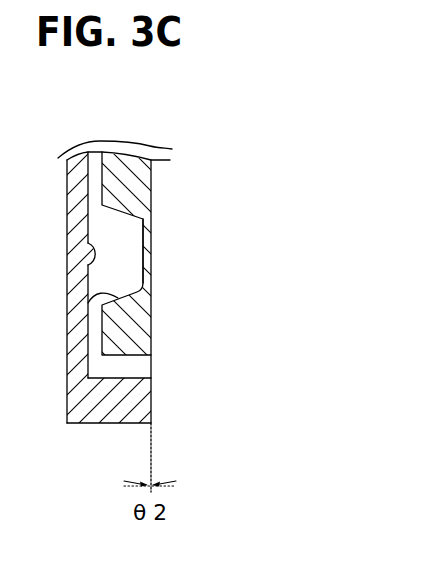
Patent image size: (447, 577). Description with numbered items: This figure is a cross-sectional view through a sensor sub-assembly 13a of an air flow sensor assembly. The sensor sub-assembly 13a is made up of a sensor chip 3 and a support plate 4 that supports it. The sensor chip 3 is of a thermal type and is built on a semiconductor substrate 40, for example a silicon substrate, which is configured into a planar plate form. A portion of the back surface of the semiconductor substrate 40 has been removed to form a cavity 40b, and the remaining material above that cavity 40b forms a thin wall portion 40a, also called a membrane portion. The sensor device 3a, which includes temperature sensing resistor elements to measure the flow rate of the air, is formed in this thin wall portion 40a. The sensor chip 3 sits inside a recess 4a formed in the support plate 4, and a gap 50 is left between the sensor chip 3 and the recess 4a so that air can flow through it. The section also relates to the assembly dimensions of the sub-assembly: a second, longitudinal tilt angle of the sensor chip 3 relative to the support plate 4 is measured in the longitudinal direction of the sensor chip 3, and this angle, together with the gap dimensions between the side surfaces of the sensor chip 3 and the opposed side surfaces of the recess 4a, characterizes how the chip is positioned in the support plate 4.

The sensor chip 3 is at (137, 196).
The sensor device 3a is at (151, 249).
The support plate 4 is at (83, 410).
The recess 4a is at (72, 241).
The sensor sub-assembly 13a is at (167, 414).
The semiconductor substrate 40 is at (153, 168).
The thin wall portion 40a is at (152, 233).
The cavity 40b is at (70, 308).
The gap 50 is at (93, 182).